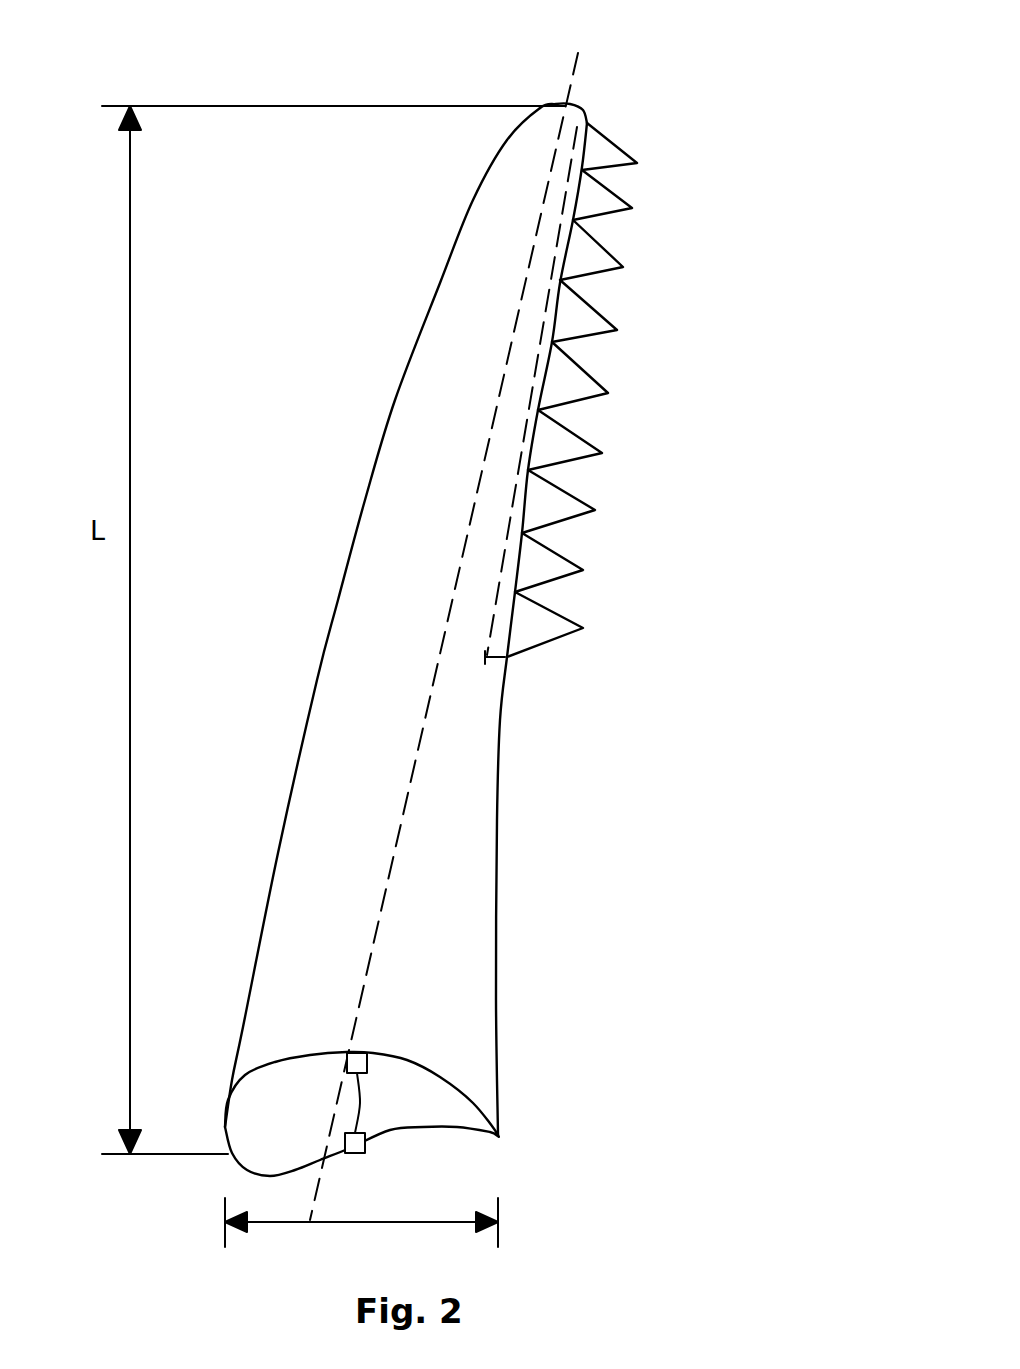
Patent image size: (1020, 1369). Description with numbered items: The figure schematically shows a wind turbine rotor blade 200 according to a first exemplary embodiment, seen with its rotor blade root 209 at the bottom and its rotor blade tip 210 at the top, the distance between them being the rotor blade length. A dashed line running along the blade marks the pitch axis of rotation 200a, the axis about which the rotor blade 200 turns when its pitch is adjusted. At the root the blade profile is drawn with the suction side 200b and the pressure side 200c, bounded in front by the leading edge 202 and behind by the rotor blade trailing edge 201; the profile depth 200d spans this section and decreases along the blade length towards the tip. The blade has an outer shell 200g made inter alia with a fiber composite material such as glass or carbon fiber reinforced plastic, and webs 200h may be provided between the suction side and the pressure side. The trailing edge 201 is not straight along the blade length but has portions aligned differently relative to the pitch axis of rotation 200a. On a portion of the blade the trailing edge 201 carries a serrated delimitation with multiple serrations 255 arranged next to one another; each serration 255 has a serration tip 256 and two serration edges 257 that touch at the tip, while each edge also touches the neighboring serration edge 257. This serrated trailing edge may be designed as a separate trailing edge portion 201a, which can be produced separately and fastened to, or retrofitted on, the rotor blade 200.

The wind turbine rotor blade 200 is at (457, 641).
The pitch axis of rotation 200a is at (528, 268).
The suction side 200b is at (380, 1053).
The pressure side 200c is at (430, 1130).
The profile depth 200d is at (361, 1231).
The outer shell 200g is at (287, 1062).
The webs 200h is at (360, 1100).
The rotor blade trailing edge 201 is at (502, 820).
The trailing edge portion 201a is at (500, 660).
The leading edge 202 is at (400, 400).
The rotor blade root 209 is at (257, 1135).
The rotor blade tip 210 is at (573, 104).
The serrations 255 is at (595, 263).
The serration tip 256 is at (585, 570).
The serration edges 257 is at (592, 363).